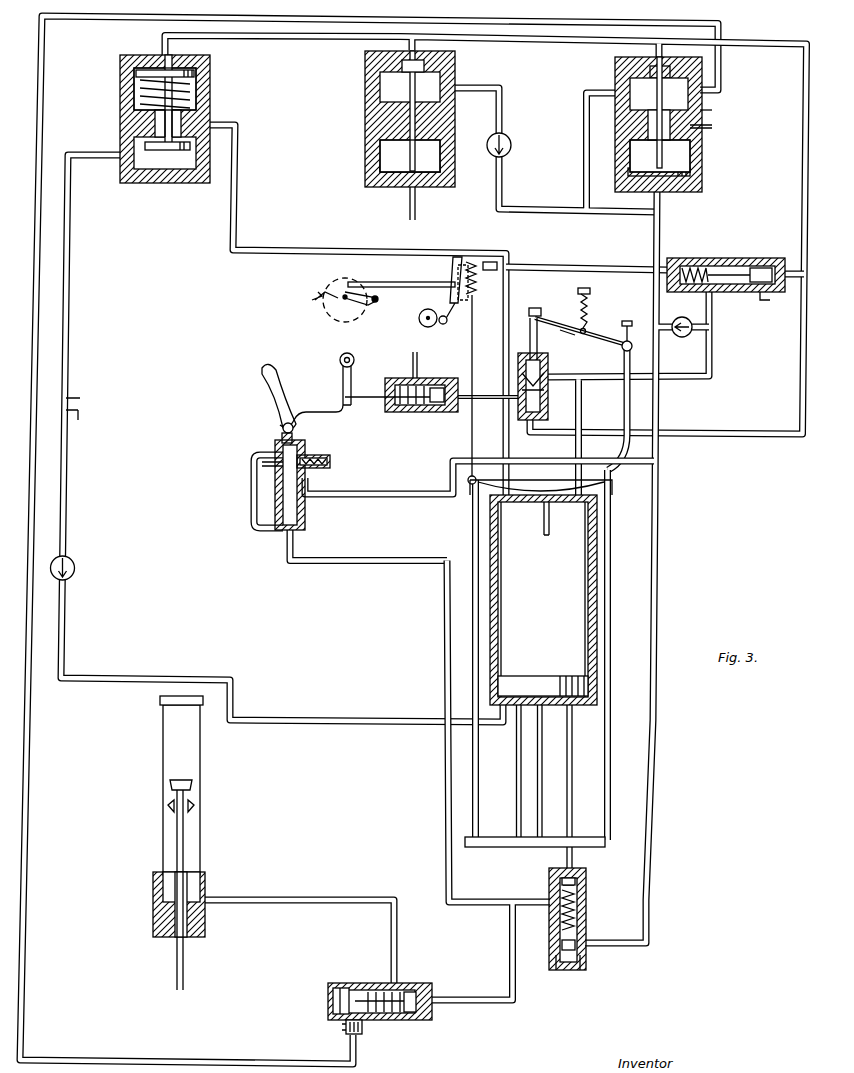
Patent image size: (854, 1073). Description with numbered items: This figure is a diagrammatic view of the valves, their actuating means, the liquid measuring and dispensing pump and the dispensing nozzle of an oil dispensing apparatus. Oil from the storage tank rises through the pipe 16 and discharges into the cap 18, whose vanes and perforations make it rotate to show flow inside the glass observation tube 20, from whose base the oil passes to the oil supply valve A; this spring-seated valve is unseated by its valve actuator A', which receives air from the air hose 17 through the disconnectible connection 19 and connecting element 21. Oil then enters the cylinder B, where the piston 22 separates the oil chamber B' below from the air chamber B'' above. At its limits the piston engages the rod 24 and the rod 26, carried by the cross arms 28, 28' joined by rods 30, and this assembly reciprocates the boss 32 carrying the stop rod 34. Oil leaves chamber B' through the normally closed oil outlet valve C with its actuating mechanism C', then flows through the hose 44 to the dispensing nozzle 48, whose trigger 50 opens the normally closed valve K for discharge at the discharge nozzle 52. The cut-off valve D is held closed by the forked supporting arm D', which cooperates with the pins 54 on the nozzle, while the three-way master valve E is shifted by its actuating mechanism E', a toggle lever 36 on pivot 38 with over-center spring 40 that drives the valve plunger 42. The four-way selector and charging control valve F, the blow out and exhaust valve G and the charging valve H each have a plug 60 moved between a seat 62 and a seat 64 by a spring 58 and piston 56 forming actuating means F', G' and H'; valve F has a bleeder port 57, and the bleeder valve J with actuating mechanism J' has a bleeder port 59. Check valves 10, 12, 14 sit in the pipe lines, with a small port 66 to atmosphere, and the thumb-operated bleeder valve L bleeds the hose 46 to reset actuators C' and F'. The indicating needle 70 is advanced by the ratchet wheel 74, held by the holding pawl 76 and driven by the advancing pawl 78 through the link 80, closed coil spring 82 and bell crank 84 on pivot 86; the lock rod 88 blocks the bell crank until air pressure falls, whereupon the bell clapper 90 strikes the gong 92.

The check valve 10 is at (84, 568).
The check valve 12 is at (682, 338).
The check valve 14 is at (512, 145).
The pipe 16 is at (185, 862).
The air hose 17 is at (60, 1060).
The cap 18 is at (192, 808).
The disconnectible connection 19 is at (362, 1028).
The glass observation tube 20 is at (200, 755).
The connecting element 21 is at (342, 1028).
The piston 22 is at (530, 676).
The rod 24 is at (543, 765).
The rod 26 is at (549, 528).
The cross arm 28 is at (535, 855).
The cross arm 28' is at (541, 479).
The rods 30 is at (612, 630).
The boss 32 is at (624, 405).
The stop rod 34 is at (634, 324).
The toggle lever 36 is at (563, 335).
The pivot 38 is at (583, 334).
The over-center spring 40 is at (590, 300).
The valve plunger 42 is at (528, 338).
The hose 44 is at (444, 652).
The hose 46 is at (428, 497).
The dispensing nozzle 48 is at (296, 532).
The dispensing trigger 50 is at (252, 490).
The discharge nozzle 52 is at (260, 380).
The pins 54 is at (282, 428).
The piston 56 is at (196, 74).
The bleeder port 57 is at (712, 127).
The spring 58 is at (192, 96).
The bleeder port 59 is at (762, 300).
The plug 60 is at (165, 152).
The seat 62 is at (212, 128).
The seat 64 is at (440, 70).
The port 66 is at (100, 415).
The indicating needle 70 is at (318, 298).
The ratchet wheel 74 is at (326, 312).
The holding pawl 76 is at (378, 298).
The advancing pawl 78 is at (410, 280).
The link 80 is at (474, 370).
The closed coil spring 82 is at (478, 292).
The bell crank 84 is at (486, 262).
The pivot 86 is at (456, 257).
The lock rod 88 is at (572, 258).
The bell clapper 90 is at (448, 322).
The gong 92 is at (418, 318).
The oil supply valve A is at (380, 990).
The valve actuator A' is at (338, 988).
The cylinder B is at (543, 600).
The oil chamber B' is at (545, 786).
The air chamber B'' is at (544, 541).
The oil outlet valve C is at (578, 919).
The actuating mechanism C' is at (583, 955).
The cut-off valve D is at (401, 394).
The supporting arm D' is at (329, 390).
The master valve E is at (541, 386).
The actuating mechanism E' is at (581, 331).
The selector and charging control valve F is at (668, 124).
The actuating means F' is at (677, 156).
The blow out and exhaust valve G is at (176, 119).
The actuating mechanism G' is at (186, 89).
The charging valve H is at (422, 135).
The actuating mechanism H' is at (431, 156).
The bleeder valve J is at (726, 263).
The actuating mechanism J' is at (695, 258).
The valve K is at (300, 490).
The bleeder valve L is at (330, 462).